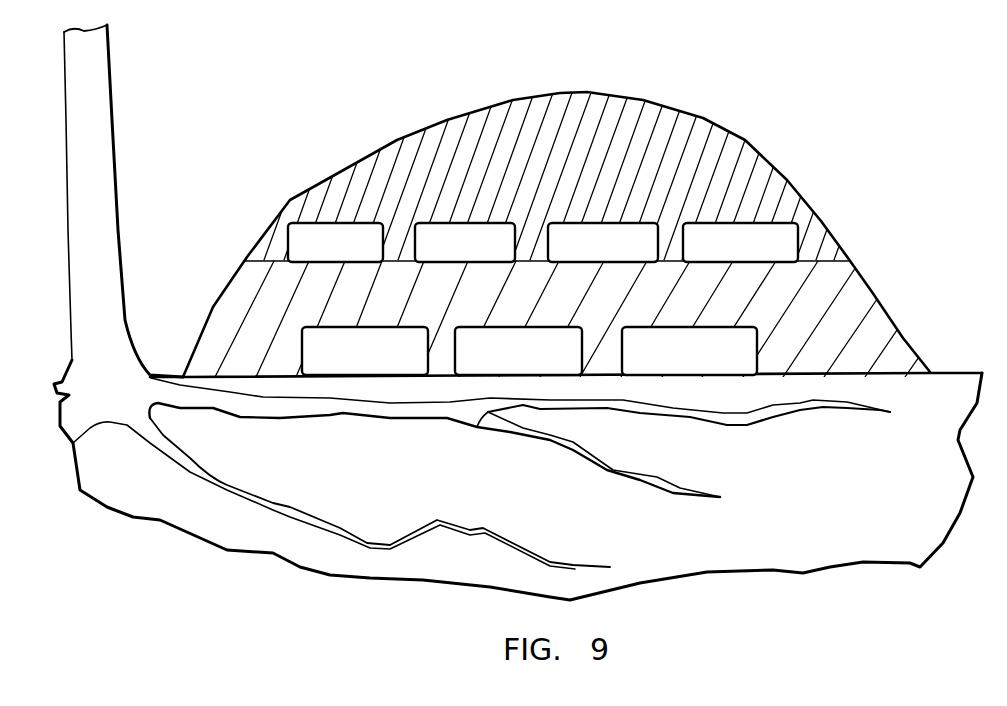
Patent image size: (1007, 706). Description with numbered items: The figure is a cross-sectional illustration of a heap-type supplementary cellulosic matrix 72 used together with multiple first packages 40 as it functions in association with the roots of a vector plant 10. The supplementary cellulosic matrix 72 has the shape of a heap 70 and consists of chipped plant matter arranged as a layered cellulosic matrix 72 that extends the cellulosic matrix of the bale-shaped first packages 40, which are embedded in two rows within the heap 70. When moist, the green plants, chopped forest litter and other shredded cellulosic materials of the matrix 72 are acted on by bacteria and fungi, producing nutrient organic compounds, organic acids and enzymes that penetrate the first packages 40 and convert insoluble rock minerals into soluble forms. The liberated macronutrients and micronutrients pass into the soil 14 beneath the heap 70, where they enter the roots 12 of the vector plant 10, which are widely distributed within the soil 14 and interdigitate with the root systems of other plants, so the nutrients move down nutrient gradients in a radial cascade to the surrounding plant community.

The vector plant 10 is at (99, 121).
The root system 12 is at (620, 410).
The soil 14 is at (502, 490).
The first package 40 is at (347, 251).
The heap 70 is at (432, 117).
The heap-type supplementary cellulosic matrix 72 is at (815, 277).